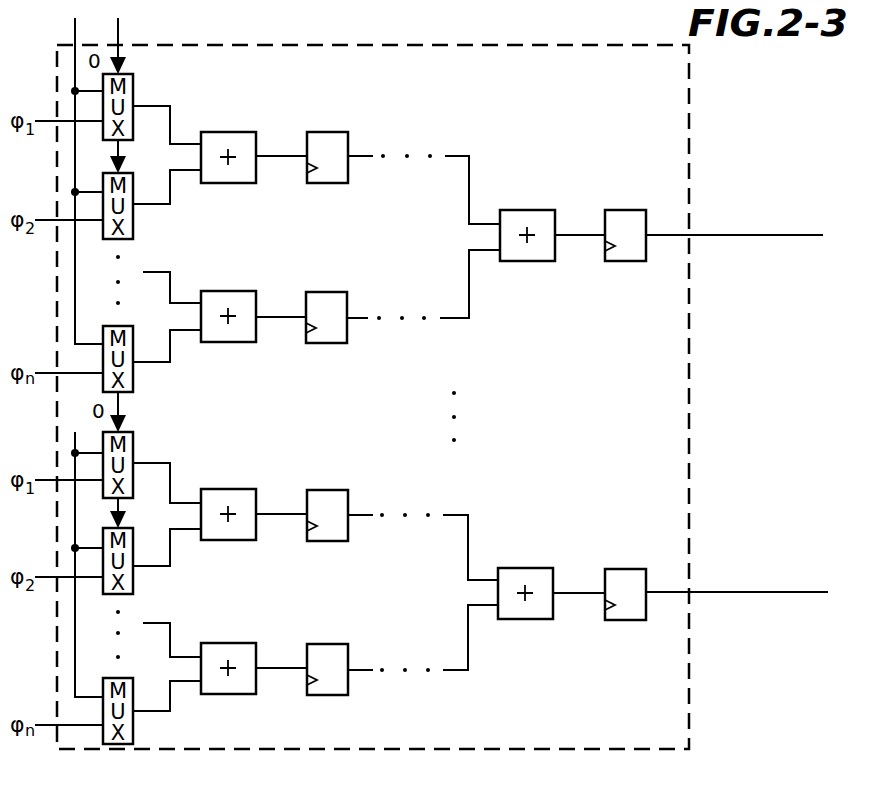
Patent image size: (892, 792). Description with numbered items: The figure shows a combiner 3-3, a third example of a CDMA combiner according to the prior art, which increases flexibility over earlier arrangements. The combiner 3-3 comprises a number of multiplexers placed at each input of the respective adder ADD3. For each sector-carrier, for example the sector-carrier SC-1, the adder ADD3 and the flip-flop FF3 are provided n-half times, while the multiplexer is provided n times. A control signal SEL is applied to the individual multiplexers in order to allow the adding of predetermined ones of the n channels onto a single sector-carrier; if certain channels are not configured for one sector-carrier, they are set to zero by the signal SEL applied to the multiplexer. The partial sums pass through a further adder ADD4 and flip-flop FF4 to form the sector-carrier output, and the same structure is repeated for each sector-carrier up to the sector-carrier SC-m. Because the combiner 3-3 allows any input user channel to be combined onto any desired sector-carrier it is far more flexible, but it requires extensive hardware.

The control signal SEL is at (132, 45).
The adder ADD3 is at (230, 132).
The flip-flop FF3 is at (328, 132).
The adder ADD4 is at (526, 210).
The flip-flop FF4 is at (624, 210).
The combiner 3-3 is at (692, 158).
The sector-carrier SC-1 is at (736, 240).
The sector-carrier SC-m is at (738, 597).